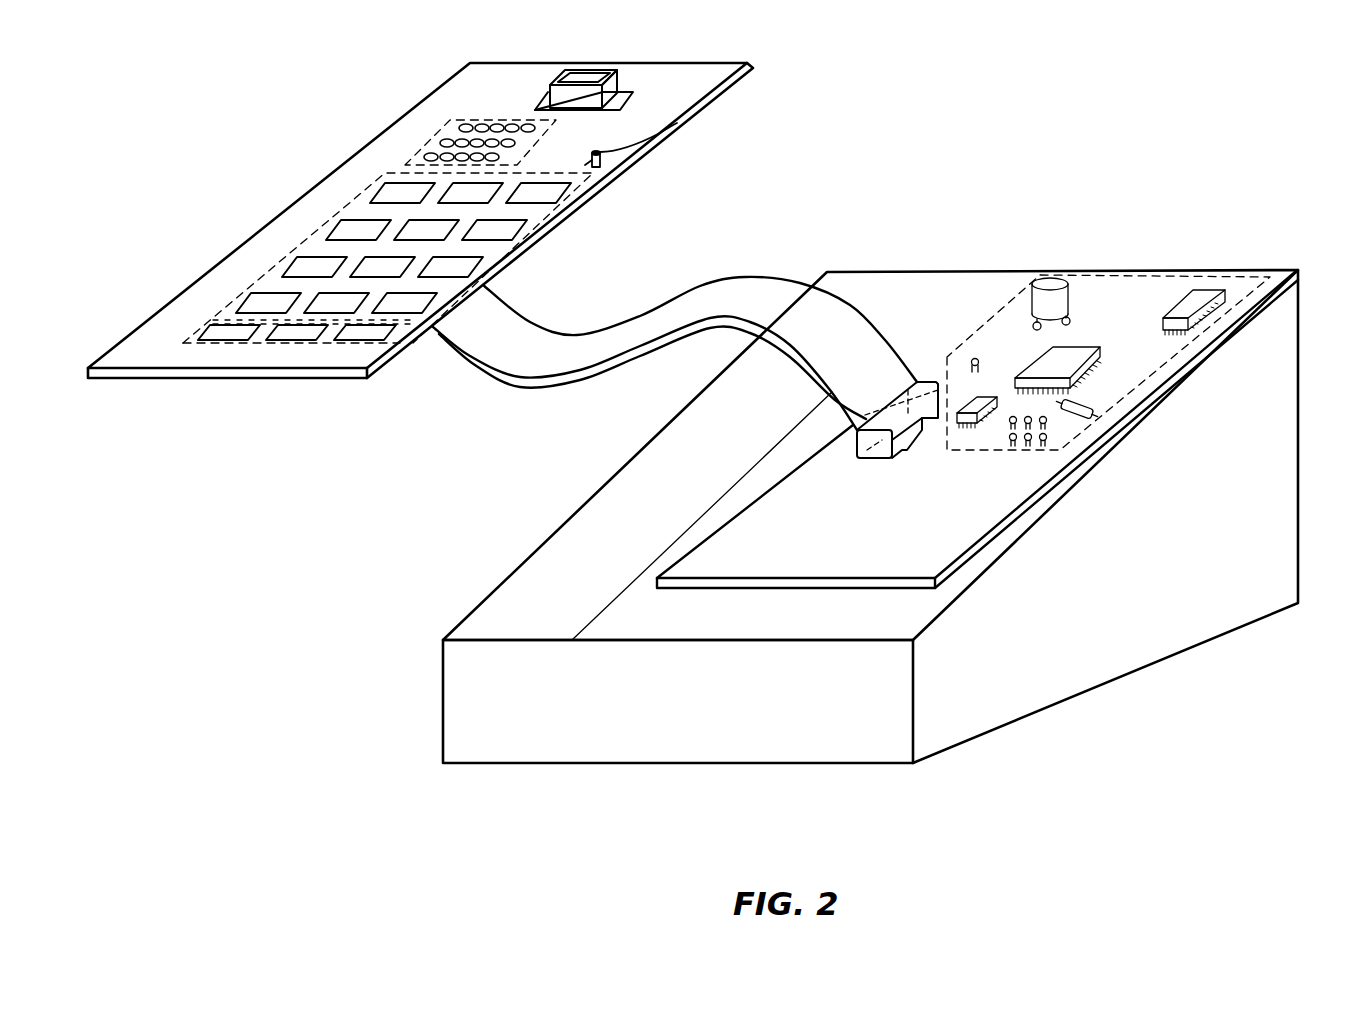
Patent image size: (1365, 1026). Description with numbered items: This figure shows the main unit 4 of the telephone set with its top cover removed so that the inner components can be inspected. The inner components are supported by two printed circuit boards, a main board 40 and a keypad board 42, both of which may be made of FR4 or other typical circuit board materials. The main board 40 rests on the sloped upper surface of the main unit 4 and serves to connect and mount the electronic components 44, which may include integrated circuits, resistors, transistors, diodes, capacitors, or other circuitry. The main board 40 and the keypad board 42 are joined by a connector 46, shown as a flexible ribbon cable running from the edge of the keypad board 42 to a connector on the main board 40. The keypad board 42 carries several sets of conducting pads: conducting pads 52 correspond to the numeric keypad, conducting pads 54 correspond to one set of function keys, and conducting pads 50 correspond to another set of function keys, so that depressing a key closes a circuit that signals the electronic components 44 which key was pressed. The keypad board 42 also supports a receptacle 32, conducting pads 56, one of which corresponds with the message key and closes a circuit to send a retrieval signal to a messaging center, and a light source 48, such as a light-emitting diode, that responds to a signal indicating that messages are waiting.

The main unit 4 is at (1286, 484).
The receptacle 32 is at (592, 70).
The main board 40 is at (982, 543).
The keypad board 42 is at (352, 358).
The electronic components 44 is at (1105, 268).
The connector 46 is at (760, 275).
The light source 48 is at (678, 131).
The conducting pads 50 is at (183, 343).
The conducting pads 52 is at (360, 193).
The conducting pads 54 is at (427, 145).
The conducting pads 56 is at (600, 167).